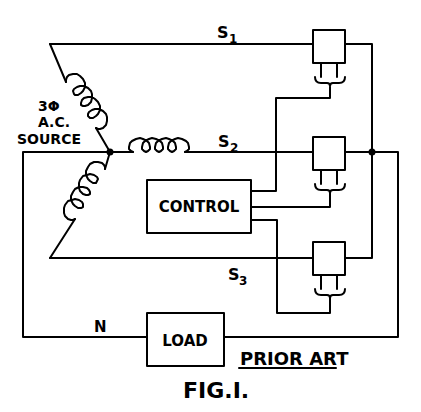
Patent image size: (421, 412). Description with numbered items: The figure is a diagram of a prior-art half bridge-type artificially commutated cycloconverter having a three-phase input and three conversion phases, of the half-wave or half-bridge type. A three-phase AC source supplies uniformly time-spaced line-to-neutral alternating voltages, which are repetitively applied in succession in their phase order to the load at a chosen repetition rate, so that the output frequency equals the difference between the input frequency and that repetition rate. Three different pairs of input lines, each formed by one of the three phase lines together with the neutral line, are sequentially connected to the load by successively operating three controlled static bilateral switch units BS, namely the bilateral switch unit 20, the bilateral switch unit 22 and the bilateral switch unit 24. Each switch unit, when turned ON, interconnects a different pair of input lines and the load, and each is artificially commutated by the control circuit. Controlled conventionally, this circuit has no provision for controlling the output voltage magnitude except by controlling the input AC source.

The bilateral switch unit 20 is at (348, 46).
The bilateral switch unit 22 is at (358, 136).
The bilateral switch unit 24 is at (358, 243).